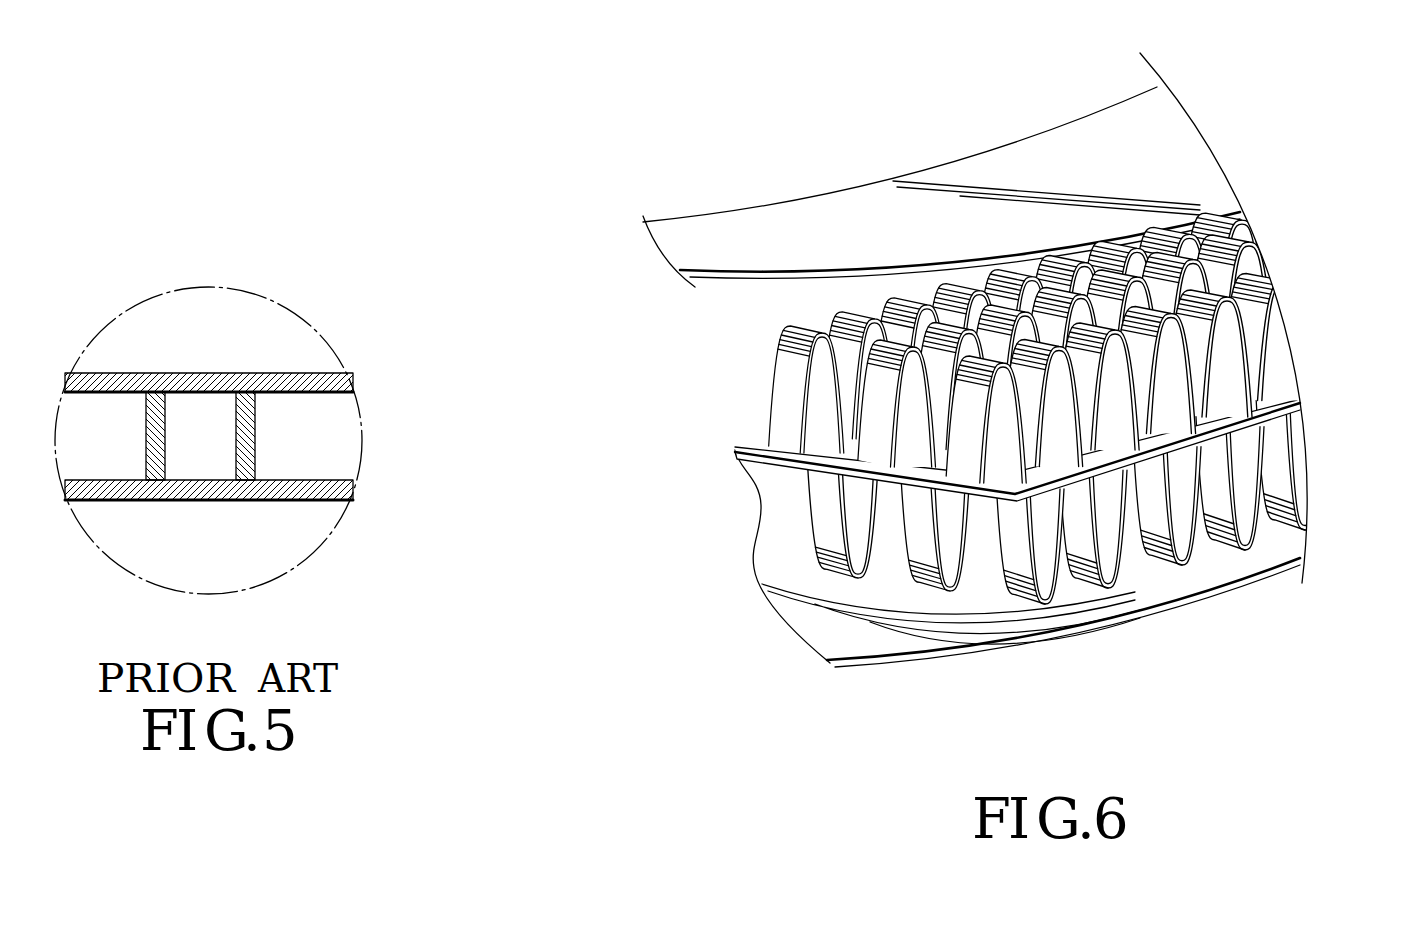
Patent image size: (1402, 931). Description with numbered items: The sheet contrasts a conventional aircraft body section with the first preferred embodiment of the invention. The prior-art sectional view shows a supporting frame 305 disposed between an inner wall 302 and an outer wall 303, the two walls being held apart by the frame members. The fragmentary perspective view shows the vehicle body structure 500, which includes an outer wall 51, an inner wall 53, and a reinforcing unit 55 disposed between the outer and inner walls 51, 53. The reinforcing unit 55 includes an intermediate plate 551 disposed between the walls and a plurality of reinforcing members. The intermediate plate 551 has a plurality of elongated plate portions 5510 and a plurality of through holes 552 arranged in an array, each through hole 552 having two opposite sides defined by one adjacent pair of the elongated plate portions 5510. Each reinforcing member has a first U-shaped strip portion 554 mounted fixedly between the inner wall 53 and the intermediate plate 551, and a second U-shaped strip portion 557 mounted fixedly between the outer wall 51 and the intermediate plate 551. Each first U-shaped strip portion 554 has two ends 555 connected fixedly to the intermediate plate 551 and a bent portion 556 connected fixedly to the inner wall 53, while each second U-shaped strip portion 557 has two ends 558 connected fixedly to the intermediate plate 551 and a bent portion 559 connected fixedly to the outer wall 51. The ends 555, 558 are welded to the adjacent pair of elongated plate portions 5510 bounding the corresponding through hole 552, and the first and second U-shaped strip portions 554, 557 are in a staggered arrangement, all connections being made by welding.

In FIG. 5, the inner wall 302 is at (127, 490).
In FIG. 5, the outer wall 303 is at (107, 380).
In FIG. 5, the supporting frame 305 is at (240, 443).
In FIG. 6, the vehicle body structure 500 is at (1015, 399).
In FIG. 6, the outer wall 51 is at (870, 633).
In FIG. 6, the inner wall 53 is at (960, 182).
In FIG. 6, the reinforcing unit 55 is at (1031, 463).
In FIG. 6, the intermediate plate 551 is at (1280, 418).
In FIG. 6, the through holes 552 is at (822, 432).
In FIG. 6, the first U-shaped strip portion 554 is at (778, 381).
In FIG. 6, the ends of first U-shaped strip portion 555 is at (760, 441).
In FIG. 6, the bent portion of first U-shaped strip portion 556 is at (878, 332).
In FIG. 6, the second U-shaped strip portion 557 is at (1090, 550).
In FIG. 6, the ends of second U-shaped strip portion 558 is at (1008, 507).
In FIG. 6, the bent portion of second U-shaped strip portion 559 is at (1252, 553).
In FIG. 6, the elongated plate portions 5510 is at (1158, 565).